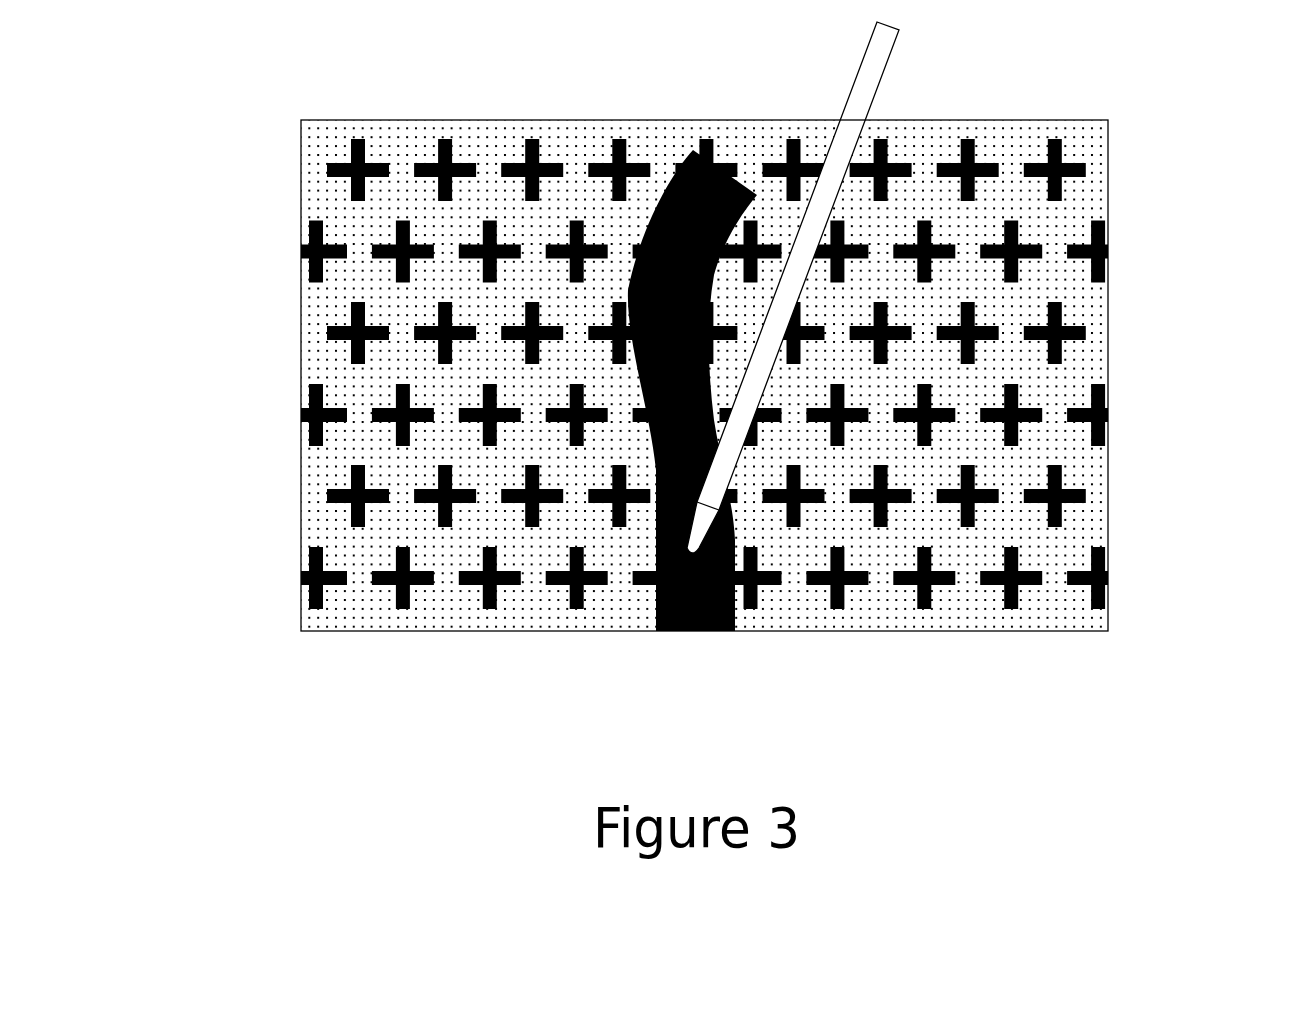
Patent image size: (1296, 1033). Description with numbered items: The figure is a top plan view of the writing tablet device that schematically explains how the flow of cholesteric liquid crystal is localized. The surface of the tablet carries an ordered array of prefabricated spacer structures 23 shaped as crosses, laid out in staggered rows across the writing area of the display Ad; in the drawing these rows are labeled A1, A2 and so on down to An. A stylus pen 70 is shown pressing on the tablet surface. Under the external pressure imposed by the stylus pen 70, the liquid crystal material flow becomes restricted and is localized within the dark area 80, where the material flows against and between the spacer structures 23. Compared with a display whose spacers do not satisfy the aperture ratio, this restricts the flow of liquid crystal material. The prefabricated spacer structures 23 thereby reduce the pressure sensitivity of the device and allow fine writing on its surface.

The prefabricated spacer structures 23 is at (1055, 496).
The stylus pen 70 is at (873, 63).
The area of localized liquid crystal flow 80 is at (735, 636).
The first electrode row A1 is at (706, 170).
The second electrode row A2 is at (707, 252).
The writing area of the display Ad is at (706, 496).
The n-th electrode row An is at (707, 578).